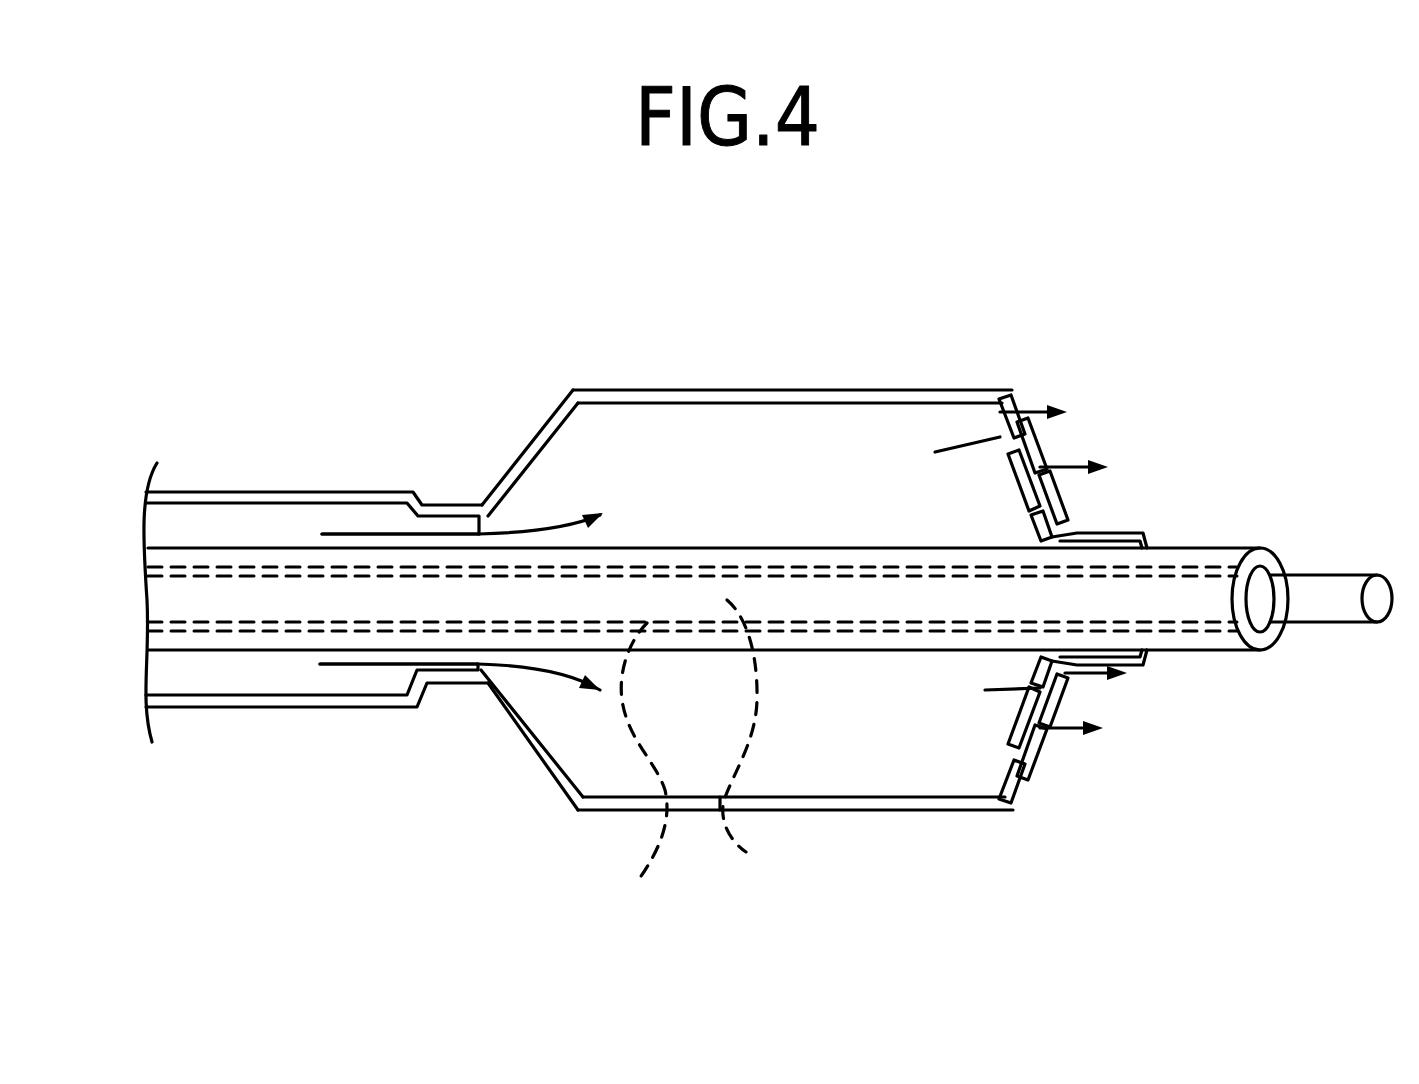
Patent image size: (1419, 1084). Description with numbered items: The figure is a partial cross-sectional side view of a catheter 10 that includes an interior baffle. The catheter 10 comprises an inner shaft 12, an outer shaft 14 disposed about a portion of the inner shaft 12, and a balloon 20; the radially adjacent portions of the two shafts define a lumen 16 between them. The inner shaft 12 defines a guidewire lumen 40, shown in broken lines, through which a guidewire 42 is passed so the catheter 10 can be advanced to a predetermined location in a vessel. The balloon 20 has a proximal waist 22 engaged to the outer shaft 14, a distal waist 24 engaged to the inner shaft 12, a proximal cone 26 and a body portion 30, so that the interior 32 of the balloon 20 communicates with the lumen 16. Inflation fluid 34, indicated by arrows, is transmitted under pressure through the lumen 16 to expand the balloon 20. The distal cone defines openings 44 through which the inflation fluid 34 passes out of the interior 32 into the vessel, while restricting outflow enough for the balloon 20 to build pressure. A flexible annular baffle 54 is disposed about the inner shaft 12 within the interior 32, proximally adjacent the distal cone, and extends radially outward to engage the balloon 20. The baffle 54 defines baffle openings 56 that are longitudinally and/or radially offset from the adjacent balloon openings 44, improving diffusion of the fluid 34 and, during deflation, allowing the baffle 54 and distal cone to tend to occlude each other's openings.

The catheter 10 is at (843, 272).
The inner shaft 12 is at (198, 492).
The outer shaft 14 is at (257, 708).
The lumen 16 is at (197, 676).
The balloon 20 is at (868, 384).
The proximal waist 22 is at (441, 690).
The distal waist 24 is at (1150, 536).
The proximal cone 26 is at (527, 447).
The body portion 30 is at (617, 390).
The interior 32 is at (716, 435).
The inflation fluid 34 is at (350, 534).
The guidewire lumen 40 is at (627, 763).
The guidewire 42 is at (755, 738).
The openings 44 is at (1030, 777).
The baffle 54 is at (986, 407).
The baffle openings 56 is at (1037, 755).